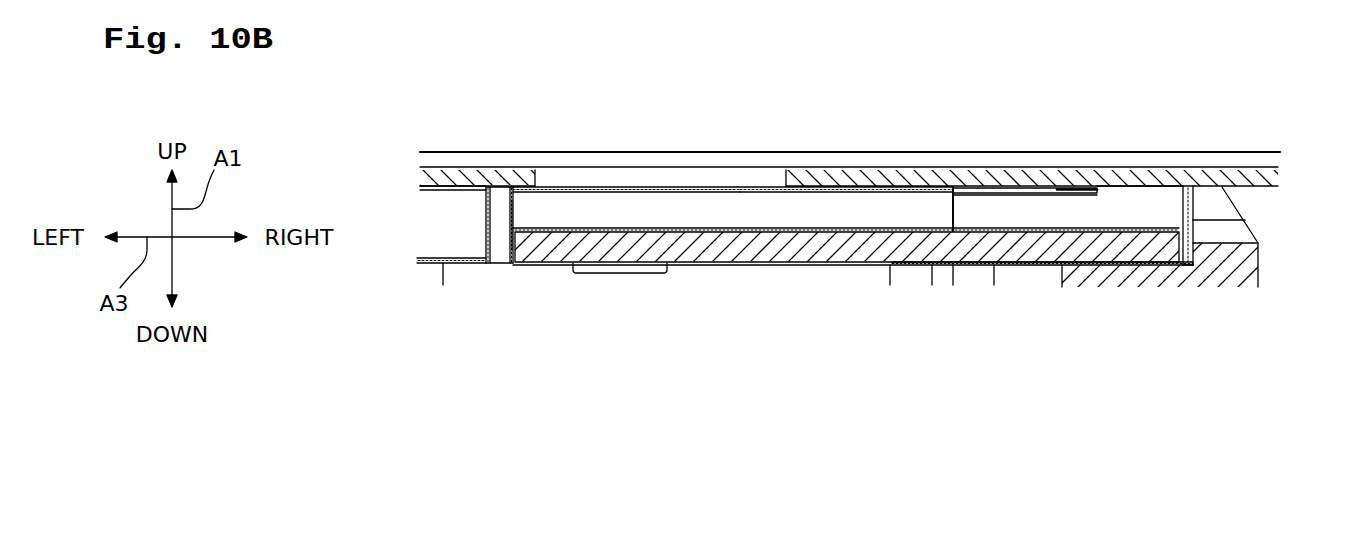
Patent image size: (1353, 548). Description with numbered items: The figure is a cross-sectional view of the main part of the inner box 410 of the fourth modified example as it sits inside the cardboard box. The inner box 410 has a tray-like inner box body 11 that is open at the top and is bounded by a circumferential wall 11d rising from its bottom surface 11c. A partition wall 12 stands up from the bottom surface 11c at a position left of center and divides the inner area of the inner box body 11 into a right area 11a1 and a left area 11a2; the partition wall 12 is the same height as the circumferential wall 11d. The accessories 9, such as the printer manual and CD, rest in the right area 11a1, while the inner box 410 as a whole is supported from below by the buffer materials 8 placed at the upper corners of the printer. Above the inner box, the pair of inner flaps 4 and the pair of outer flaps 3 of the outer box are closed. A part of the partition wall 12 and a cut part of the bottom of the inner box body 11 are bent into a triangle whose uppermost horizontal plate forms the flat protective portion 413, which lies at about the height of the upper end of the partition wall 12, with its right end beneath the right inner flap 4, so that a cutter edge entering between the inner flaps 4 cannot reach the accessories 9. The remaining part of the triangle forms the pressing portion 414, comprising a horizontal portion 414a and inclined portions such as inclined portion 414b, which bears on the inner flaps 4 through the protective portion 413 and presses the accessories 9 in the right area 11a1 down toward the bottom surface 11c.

The outer flaps 3 is at (955, 163).
The inner flaps 4 is at (438, 183).
The buffer materials 8 is at (1225, 268).
The accessories 9 is at (1072, 245).
The inner box body 11 is at (610, 288).
The right area 11a1 is at (1153, 207).
The left area 11a2 is at (447, 245).
The bottom surface 11c is at (1157, 252).
The circumferential wall 11d is at (1193, 212).
The partition wall 12 is at (513, 213).
The inner box 410 is at (607, 175).
The protective portion 413 is at (702, 186).
The pressing portion 414 is at (809, 250).
The horizontal portion 414a is at (752, 188).
The inclined portion 414b is at (873, 203).